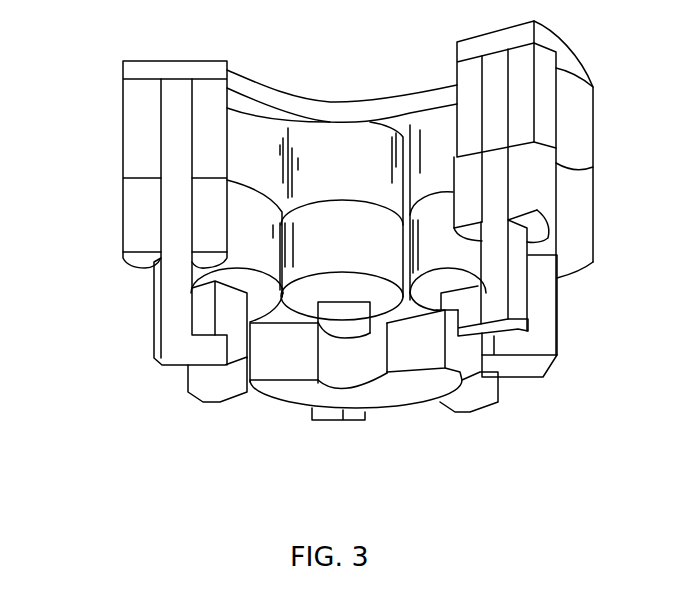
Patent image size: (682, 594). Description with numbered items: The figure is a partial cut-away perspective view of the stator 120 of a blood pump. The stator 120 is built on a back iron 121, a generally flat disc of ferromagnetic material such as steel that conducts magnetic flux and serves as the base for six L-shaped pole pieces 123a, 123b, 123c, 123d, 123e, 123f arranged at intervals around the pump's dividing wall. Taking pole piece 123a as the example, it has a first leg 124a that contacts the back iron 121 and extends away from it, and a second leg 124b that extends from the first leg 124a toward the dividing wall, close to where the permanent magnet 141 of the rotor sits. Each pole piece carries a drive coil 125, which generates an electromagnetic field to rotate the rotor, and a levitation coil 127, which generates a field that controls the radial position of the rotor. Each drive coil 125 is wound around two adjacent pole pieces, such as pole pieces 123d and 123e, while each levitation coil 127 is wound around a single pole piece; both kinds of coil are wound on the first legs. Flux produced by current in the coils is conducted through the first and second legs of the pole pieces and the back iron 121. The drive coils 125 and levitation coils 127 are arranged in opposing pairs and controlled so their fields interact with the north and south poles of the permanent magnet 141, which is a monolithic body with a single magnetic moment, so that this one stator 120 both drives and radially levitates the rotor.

The stator 120 is at (212, 467).
The back iron 121 is at (175, 70).
The pole piece 123a is at (512, 297).
The pole piece 123b is at (555, 372).
The pole piece 123c is at (468, 408).
The pole piece 123d is at (340, 427).
The pole piece 123e is at (203, 402).
The pole piece 123f is at (162, 366).
The first leg 124a is at (493, 115).
The second leg 124b is at (483, 338).
The drive coil 125 is at (255, 125).
The levitation coil 127 is at (128, 230).
The permanent magnet 141 is at (293, 387).